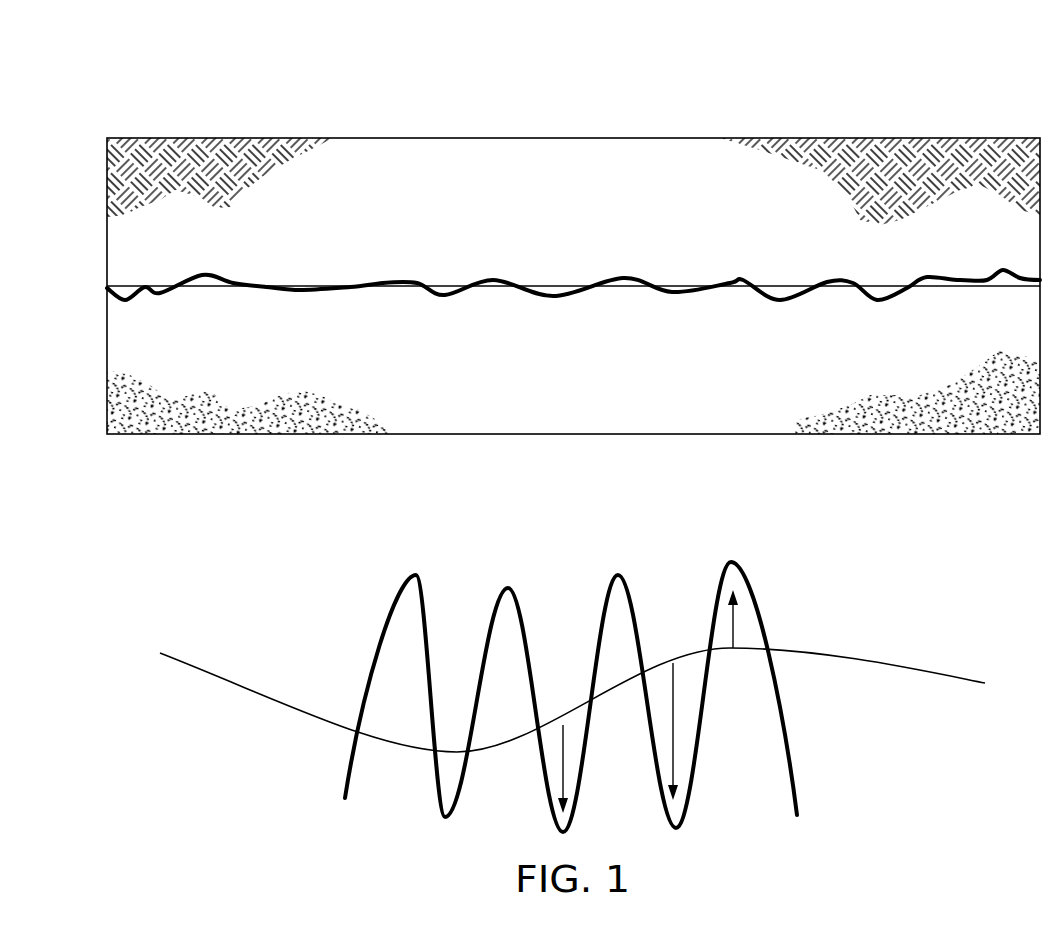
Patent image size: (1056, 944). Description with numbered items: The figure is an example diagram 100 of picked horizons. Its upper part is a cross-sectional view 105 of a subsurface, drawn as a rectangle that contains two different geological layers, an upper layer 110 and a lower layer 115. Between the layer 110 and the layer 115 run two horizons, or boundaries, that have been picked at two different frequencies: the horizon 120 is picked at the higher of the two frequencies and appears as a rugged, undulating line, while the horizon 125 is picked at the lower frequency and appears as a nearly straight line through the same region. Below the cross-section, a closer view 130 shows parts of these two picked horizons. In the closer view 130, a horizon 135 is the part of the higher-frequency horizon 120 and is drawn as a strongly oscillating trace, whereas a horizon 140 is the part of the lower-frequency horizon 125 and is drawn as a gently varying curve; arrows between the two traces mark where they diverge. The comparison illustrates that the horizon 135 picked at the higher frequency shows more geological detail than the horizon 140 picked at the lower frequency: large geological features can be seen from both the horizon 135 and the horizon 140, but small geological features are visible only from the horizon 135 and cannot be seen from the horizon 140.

The diagram 100 is at (536, 267).
The cross-sectional view 105 is at (107, 250).
The geological layer 110 is at (430, 168).
The geological layer 115 is at (430, 405).
The horizon 120 is at (957, 278).
The horizon 125 is at (958, 290).
The closer view 130 is at (572, 669).
The horizon 135 is at (382, 645).
The horizon 140 is at (320, 718).